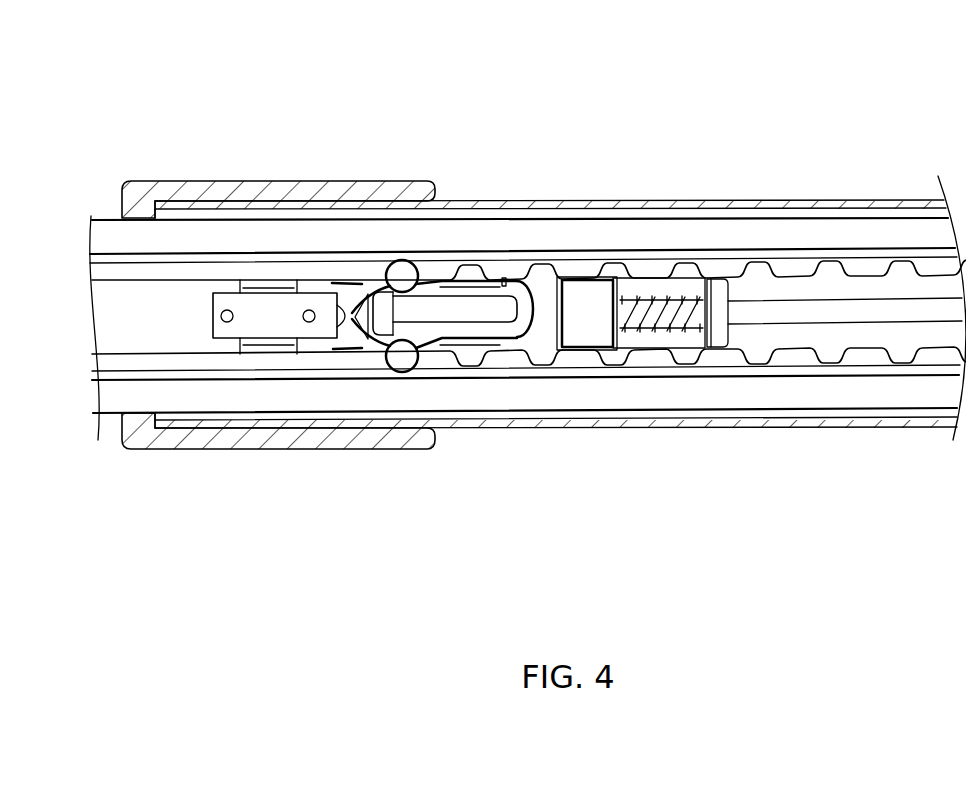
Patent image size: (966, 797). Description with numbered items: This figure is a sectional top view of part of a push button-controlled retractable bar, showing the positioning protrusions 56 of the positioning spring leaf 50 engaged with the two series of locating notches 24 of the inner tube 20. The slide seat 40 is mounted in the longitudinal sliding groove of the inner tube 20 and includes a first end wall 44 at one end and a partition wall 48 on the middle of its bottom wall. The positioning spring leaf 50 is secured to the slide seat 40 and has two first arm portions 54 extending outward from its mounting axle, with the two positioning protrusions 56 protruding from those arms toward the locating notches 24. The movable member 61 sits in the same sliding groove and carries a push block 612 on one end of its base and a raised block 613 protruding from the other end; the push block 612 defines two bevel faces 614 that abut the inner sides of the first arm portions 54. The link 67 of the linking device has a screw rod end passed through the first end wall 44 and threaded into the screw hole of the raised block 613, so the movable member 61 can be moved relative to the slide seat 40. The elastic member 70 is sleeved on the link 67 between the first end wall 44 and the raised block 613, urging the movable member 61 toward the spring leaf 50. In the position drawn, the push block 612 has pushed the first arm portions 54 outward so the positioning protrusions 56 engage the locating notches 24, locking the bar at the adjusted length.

The inner tube 20 is at (912, 236).
The locating notches 24 is at (384, 262).
The slide seat 40 is at (742, 294).
The first end wall 44 is at (715, 293).
The partition wall 48 is at (540, 266).
The positioning spring leaf 50 is at (348, 346).
The first arm portions 54 is at (470, 284).
The positioning protrusions 56 is at (401, 262).
The movable member 61 is at (637, 341).
The link 67 is at (885, 313).
The elastic member 70 is at (650, 300).
The push block 612 is at (488, 340).
The raised block 613 is at (582, 296).
The bevel faces 614 is at (421, 290).